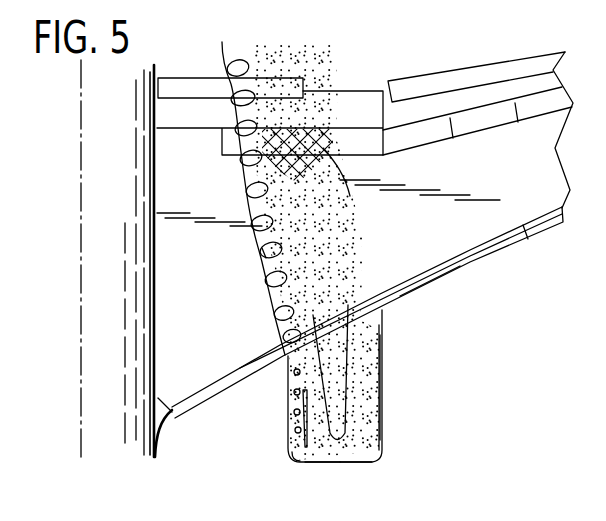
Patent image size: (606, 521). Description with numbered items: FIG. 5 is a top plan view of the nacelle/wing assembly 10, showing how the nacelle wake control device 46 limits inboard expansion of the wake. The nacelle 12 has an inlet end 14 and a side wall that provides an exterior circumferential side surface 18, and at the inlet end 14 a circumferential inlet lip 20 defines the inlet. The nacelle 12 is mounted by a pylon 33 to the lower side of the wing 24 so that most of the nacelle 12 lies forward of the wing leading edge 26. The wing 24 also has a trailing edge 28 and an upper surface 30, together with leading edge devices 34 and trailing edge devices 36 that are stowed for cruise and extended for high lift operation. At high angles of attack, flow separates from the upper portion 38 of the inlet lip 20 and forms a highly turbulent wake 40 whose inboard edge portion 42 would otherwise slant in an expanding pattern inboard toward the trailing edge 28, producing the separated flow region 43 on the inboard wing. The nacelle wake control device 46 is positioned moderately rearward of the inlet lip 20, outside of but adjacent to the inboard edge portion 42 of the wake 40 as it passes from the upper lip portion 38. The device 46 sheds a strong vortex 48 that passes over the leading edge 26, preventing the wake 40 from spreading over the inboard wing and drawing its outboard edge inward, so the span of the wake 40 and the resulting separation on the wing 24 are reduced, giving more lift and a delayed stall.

The nacelle/wing assembly 10 is at (255, 420).
The nacelle 12 is at (393, 418).
The inlet end 14 is at (369, 463).
The exterior circumferential side surface 18 is at (382, 367).
The inlet lip 20 is at (300, 464).
The wing 24 is at (446, 296).
The leading edge 26 is at (527, 240).
The trailing edge 28 is at (422, 132).
The upper surface 30 is at (503, 191).
The pylon 33 is at (352, 378).
The leading edge devices 34 is at (460, 272).
The trailing edge devices 36 is at (512, 88).
The upper portion of the inlet lip 38 is at (323, 464).
The turbulent wake 40 is at (332, 235).
The inboard edge portion of the wake 42 is at (268, 305).
The separated flow region 43 is at (318, 164).
The nacelle wake control device 46 is at (303, 442).
The vortex 48 is at (262, 248).